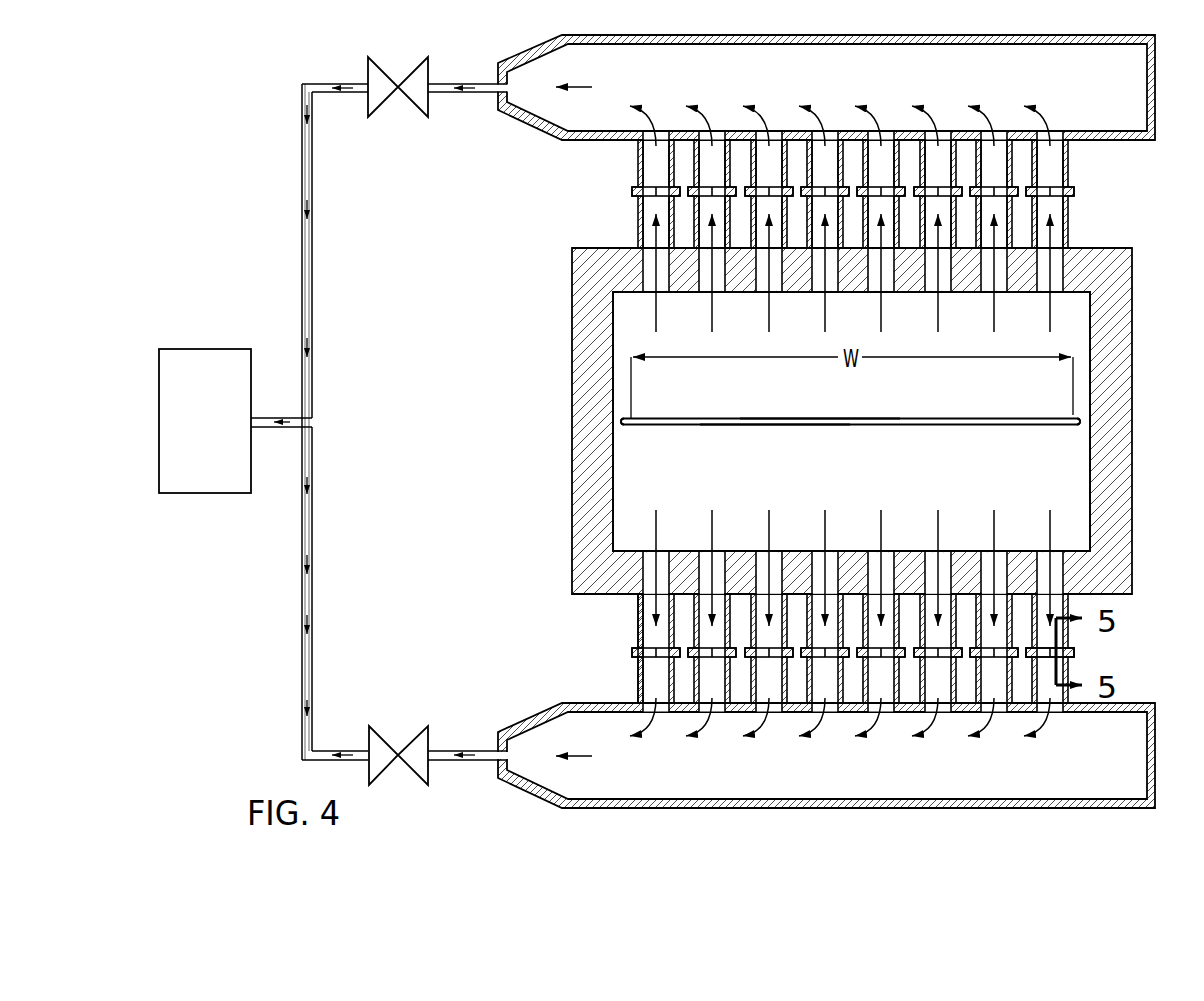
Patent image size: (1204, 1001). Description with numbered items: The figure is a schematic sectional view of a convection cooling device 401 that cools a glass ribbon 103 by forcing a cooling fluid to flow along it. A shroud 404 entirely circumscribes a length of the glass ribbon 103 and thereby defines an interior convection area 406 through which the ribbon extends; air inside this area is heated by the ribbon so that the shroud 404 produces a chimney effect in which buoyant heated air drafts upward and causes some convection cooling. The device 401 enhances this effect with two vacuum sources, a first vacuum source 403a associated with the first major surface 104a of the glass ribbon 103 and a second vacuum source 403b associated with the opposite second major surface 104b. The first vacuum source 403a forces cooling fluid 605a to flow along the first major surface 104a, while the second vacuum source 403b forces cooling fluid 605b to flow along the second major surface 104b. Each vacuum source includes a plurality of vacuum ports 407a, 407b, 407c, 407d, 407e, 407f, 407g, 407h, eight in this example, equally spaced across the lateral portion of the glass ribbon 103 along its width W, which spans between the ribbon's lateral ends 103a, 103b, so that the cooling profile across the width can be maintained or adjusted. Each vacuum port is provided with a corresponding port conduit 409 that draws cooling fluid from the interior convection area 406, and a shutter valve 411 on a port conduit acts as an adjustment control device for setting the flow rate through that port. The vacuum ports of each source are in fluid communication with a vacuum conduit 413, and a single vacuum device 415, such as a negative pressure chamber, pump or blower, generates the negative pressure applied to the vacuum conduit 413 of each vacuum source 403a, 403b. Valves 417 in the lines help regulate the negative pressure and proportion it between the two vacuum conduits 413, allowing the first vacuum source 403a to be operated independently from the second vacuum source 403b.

The convection cooling device 401 is at (215, 95).
The first vacuum source 403a is at (1164, 757).
The second vacuum source 403b is at (1164, 90).
The shroud 404 is at (1133, 318).
The interior convection area 406 is at (1085, 388).
The vacuum port 407a is at (682, 534).
The vacuum port 407b is at (738, 534).
The vacuum port 407c is at (795, 534).
The vacuum port 407d is at (851, 534).
The vacuum port 407e is at (907, 534).
The vacuum port 407f is at (964, 534).
The vacuum port 407g is at (1020, 534).
The vacuum port 407h is at (1060, 550).
The port conduit 409 is at (639, 680).
The shutter valve 411 is at (1074, 652).
The vacuum conduit 413 is at (893, 806).
The vacuum device 415 is at (228, 349).
The valve 417 is at (403, 722).
The cooling fluid 605a is at (597, 736).
The cooling fluid 605b is at (597, 68).
The glass ribbon 103 is at (915, 419).
The substrate first edge 103a is at (622, 424).
The substrate second edge 103b is at (1080, 424).
The first major surface 104a is at (773, 427).
The second major surface 104b is at (815, 415).